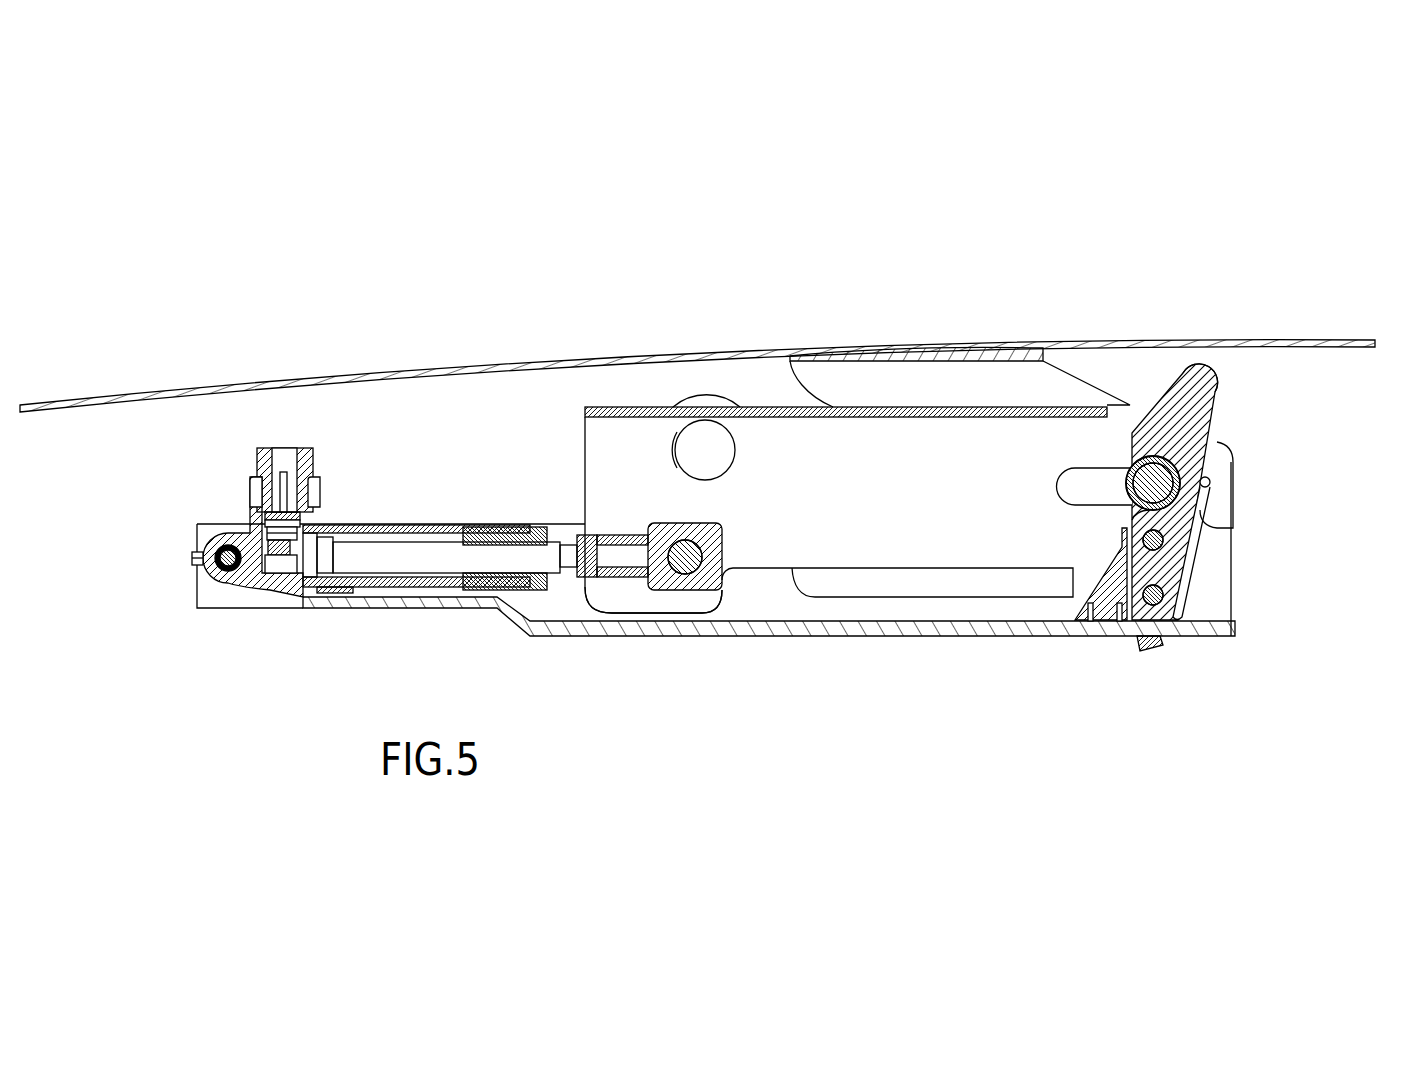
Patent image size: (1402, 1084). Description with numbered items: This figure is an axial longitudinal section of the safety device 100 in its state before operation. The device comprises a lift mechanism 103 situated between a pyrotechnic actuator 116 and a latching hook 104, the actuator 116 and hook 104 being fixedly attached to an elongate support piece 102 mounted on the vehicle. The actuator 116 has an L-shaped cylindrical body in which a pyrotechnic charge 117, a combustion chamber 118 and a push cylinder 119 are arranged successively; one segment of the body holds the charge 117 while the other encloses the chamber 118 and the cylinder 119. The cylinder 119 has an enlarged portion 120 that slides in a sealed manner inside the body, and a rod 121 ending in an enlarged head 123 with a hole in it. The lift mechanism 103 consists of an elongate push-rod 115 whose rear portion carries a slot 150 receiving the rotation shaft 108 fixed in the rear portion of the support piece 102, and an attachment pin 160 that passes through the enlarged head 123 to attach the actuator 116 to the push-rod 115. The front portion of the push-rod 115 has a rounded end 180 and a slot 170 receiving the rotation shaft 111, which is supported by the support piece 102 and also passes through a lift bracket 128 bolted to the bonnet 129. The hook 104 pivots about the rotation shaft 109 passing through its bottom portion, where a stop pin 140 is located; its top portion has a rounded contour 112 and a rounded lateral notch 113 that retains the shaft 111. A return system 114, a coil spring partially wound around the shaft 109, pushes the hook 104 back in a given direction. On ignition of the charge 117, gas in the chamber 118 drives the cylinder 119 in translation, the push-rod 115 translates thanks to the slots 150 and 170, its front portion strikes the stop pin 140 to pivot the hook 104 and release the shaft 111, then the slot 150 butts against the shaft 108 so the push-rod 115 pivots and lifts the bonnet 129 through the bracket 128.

The safety device 100 is at (1147, 322).
The support piece 102 is at (867, 630).
The lift mechanism 103 is at (762, 400).
The latching hook 104 is at (1185, 410).
The rotation shaft 108 is at (706, 470).
The rotation shaft 109 is at (1173, 622).
The rotation shaft 111 is at (1140, 460).
The rounded contour 112 is at (1213, 374).
The rounded lateral notch 113 is at (1167, 547).
The return system 114 is at (1203, 577).
The push-rod 115 is at (960, 432).
The pyrotechnic actuator 116 is at (430, 588).
The pyrotechnic charge 117 is at (282, 512).
The combustion chamber 118 is at (280, 565).
The push cylinder 119 is at (517, 540).
The enlarged portion 120 is at (325, 547).
The rod 121 is at (425, 555).
The enlarged head 123 is at (703, 582).
The lift bracket 128 is at (940, 380).
The bonnet 129 is at (403, 369).
The stop pin 140 is at (1140, 543).
The slot 150 is at (672, 447).
The attachment pin 160 is at (730, 540).
The slot 170 is at (1095, 495).
The rounded end 180 is at (1217, 444).